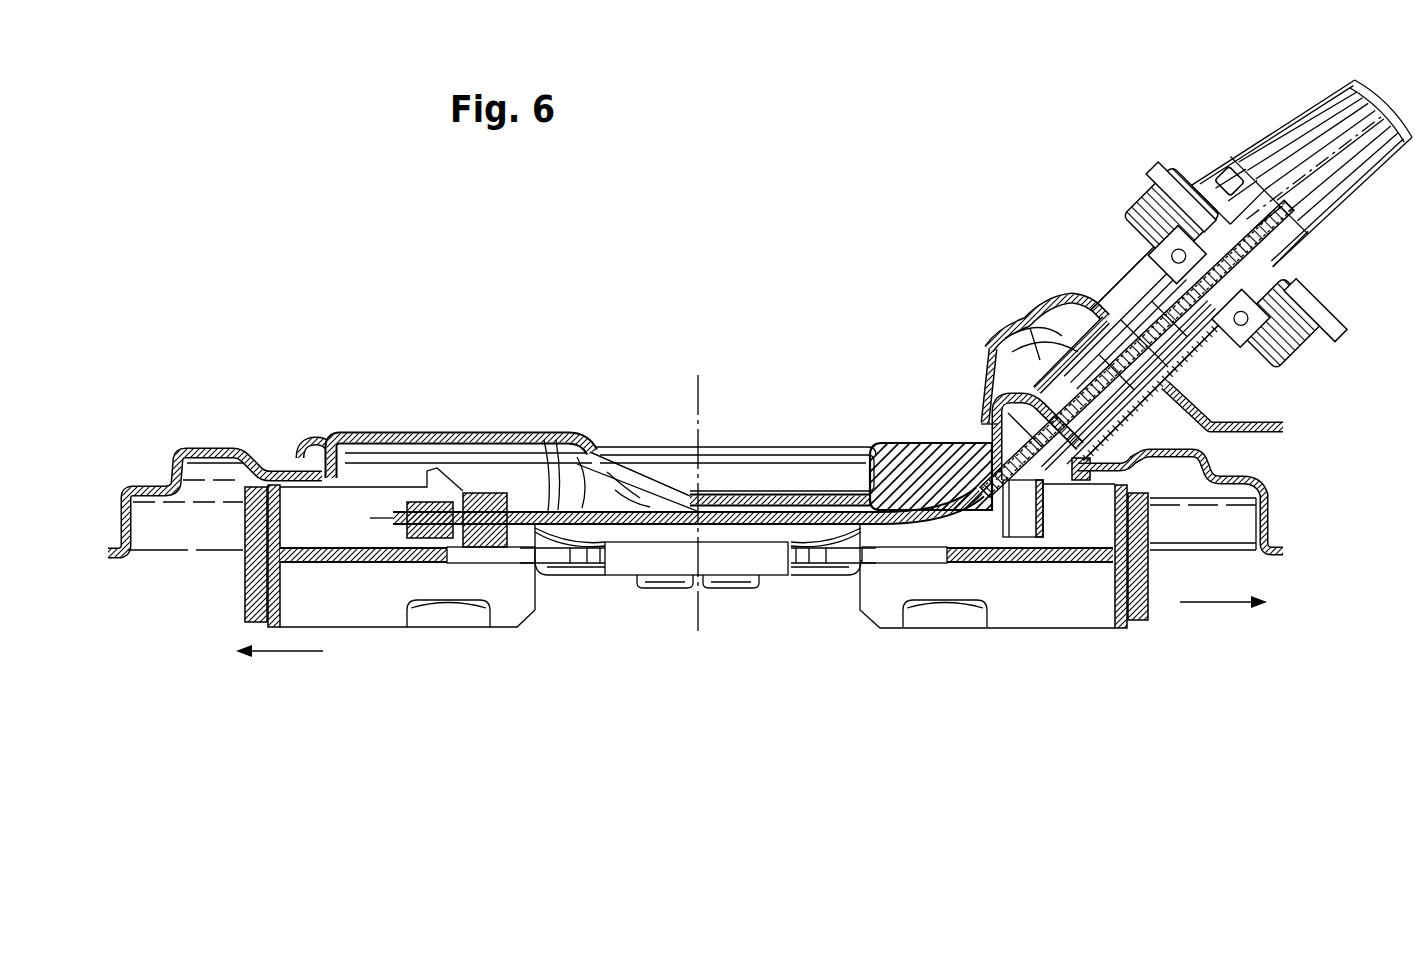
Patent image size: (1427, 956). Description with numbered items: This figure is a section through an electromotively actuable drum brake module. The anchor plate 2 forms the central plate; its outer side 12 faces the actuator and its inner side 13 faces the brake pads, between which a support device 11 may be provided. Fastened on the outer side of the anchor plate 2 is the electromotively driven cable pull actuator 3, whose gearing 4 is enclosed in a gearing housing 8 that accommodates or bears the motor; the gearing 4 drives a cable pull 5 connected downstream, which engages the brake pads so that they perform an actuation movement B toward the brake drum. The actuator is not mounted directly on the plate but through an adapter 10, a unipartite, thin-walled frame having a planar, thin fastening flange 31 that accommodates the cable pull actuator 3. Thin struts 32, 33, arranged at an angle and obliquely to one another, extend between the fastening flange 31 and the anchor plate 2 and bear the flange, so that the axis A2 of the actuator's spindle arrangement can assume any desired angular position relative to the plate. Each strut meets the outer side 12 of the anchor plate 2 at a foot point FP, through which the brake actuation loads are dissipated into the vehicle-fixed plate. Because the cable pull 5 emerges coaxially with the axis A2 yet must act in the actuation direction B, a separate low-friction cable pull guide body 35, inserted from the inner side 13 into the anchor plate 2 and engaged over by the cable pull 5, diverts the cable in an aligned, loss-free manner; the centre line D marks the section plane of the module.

The anchor plate 2 is at (237, 448).
The cable pull actuator 3 is at (1166, 305).
The gearing 4 is at (1143, 355).
The cable pull 5 is at (638, 512).
The gearing housing 8 is at (1173, 117).
The adapter 10 is at (1035, 298).
The support device 11 is at (668, 560).
The outer side 12 is at (208, 447).
The inner side 13 is at (178, 530).
The fastening flange 31 is at (1205, 412).
The strut 32 is at (987, 352).
The strut 33 is at (1027, 323).
The cable pull guide body 35 is at (912, 473).
The axis A2 is at (1392, 97).
The actuation movement B is at (282, 651).
The central axis D is at (700, 409).
The foot point FP is at (1177, 473).